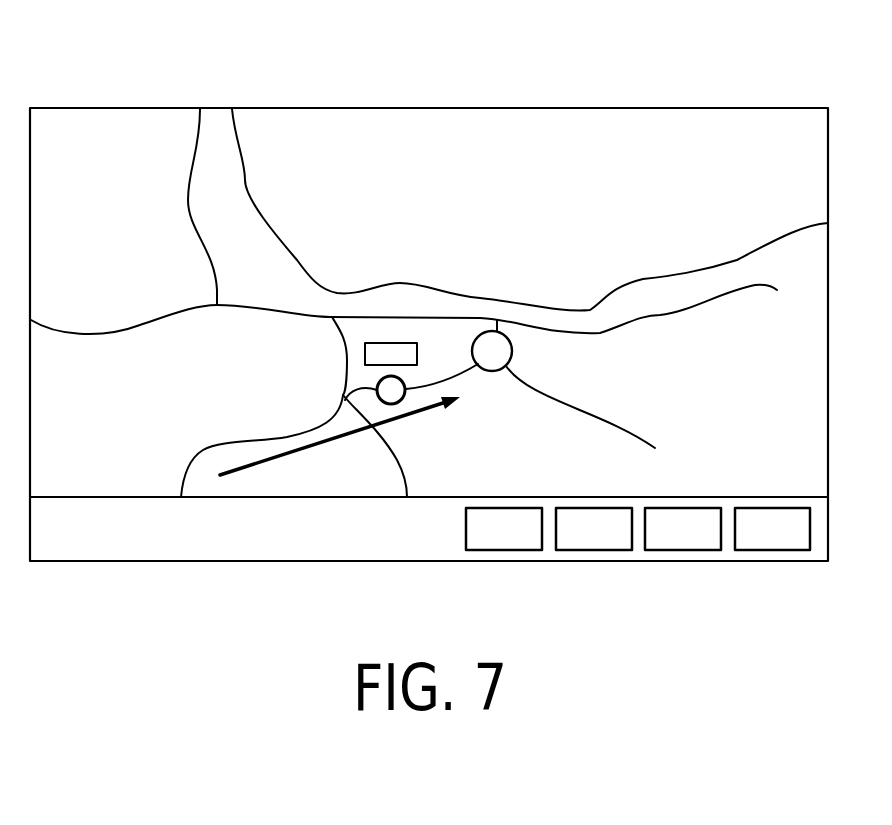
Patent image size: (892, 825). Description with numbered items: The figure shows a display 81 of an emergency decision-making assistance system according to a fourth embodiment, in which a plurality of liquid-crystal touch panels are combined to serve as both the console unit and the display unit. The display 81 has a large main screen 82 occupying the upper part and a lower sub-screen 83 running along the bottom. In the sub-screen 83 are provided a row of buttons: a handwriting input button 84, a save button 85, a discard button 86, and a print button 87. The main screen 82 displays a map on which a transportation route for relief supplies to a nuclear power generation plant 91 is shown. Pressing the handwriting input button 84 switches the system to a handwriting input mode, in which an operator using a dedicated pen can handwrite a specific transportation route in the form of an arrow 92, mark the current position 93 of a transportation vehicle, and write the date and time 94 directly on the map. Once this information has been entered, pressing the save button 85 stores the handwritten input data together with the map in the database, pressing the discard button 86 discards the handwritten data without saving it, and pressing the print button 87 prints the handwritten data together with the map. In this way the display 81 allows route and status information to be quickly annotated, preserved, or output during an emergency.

The display 81 is at (749, 103).
The main screen 82 is at (528, 123).
The sub-screen 83 is at (360, 545).
The handwriting input button 84 is at (766, 551).
The save button 85 is at (680, 551).
The discard button 86 is at (589, 551).
The print button 87 is at (503, 551).
The nuclear power generation plant 91 is at (513, 348).
The arrow 92 is at (337, 441).
The current position 93 is at (380, 380).
The date and time 94 is at (390, 352).